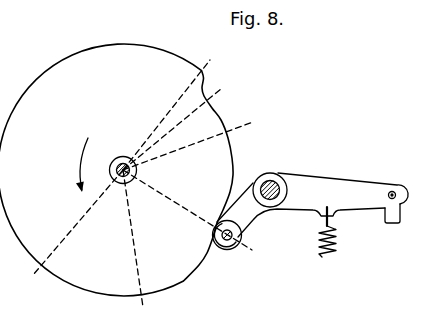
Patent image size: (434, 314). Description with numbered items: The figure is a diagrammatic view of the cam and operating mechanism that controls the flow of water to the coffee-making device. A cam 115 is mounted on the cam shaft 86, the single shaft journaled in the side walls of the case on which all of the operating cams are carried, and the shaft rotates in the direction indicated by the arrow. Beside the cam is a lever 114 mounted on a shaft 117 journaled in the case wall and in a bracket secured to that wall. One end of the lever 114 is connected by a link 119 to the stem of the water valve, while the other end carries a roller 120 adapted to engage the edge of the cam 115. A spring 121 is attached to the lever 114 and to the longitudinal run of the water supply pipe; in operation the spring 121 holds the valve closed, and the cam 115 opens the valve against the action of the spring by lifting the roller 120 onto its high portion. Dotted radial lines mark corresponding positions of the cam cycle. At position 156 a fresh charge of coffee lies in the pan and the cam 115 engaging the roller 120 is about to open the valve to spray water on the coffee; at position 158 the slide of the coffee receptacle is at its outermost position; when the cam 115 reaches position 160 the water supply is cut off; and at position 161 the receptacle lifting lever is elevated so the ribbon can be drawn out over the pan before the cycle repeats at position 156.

The cam 115 is at (155, 52).
The cam shaft 86 is at (119, 181).
The position 160 is at (177, 102).
The position 161 is at (222, 88).
The position 156 is at (170, 198).
The position 158 is at (135, 239).
The lever 114 is at (330, 178).
The shaft 117 is at (272, 186).
The link 119 is at (397, 223).
The roller 120 is at (220, 251).
The spring 121 is at (320, 257).